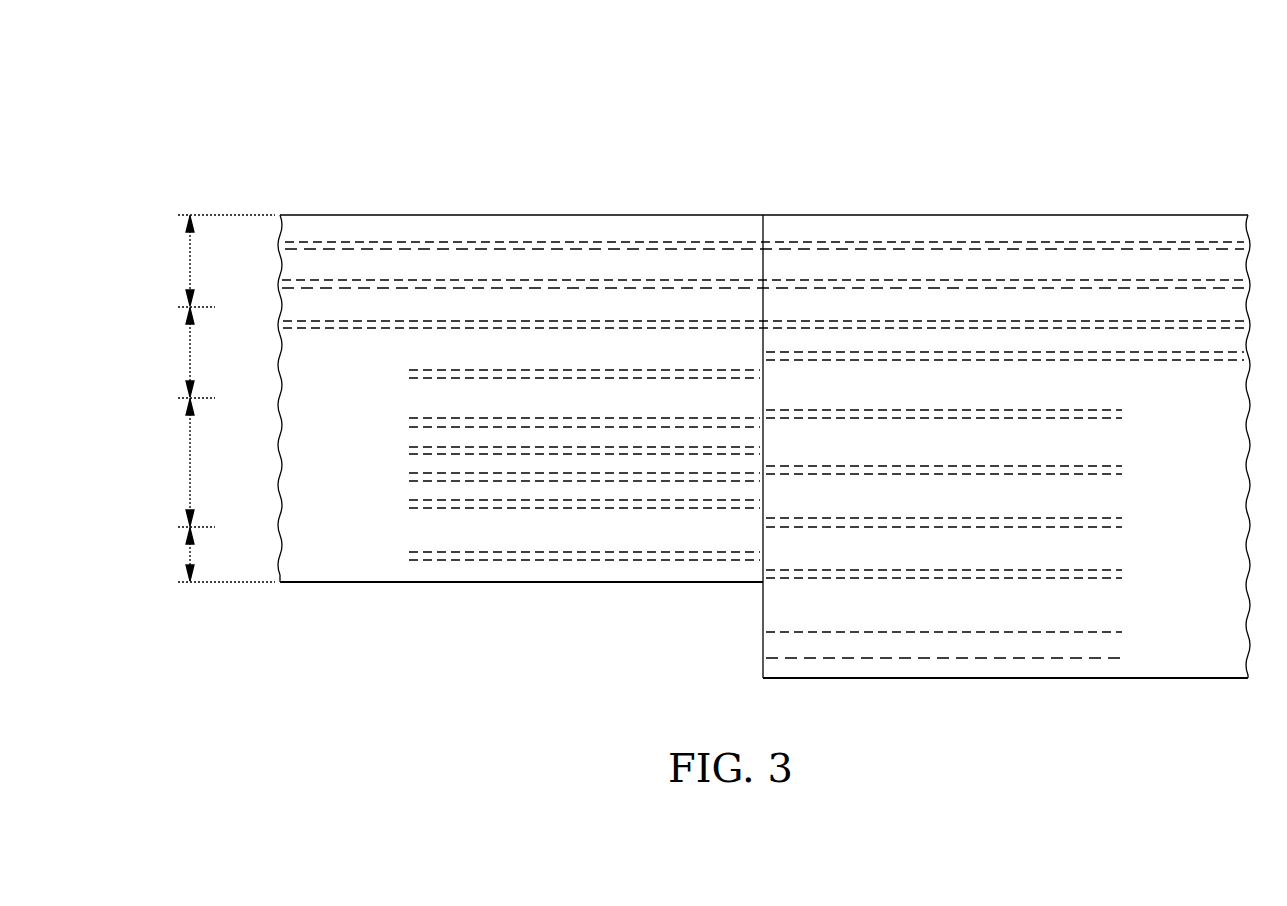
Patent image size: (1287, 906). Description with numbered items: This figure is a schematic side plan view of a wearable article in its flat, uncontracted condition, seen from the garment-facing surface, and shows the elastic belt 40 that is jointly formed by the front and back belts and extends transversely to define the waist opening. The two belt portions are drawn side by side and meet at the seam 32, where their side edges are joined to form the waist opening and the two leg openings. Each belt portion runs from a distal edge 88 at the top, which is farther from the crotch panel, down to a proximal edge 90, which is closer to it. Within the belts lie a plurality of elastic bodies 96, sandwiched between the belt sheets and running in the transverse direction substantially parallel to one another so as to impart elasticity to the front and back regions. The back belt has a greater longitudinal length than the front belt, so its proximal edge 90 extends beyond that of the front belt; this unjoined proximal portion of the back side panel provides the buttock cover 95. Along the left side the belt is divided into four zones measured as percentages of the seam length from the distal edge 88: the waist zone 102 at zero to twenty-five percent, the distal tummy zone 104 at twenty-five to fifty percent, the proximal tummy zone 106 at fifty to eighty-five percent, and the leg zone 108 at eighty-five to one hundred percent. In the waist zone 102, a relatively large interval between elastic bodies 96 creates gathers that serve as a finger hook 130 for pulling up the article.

The elastic belt 40 is at (596, 96).
The distal edge 88 is at (437, 215).
The proximal edge 90 is at (545, 583).
The seam 32 is at (763, 215).
The finger hook 130 is at (543, 252).
The elastic bodies 96 is at (300, 251).
The buttock cover 95 is at (748, 648).
The waist zone 102 is at (190, 263).
The distal tummy zone 104 is at (190, 357).
The proximal tummy zone 106 is at (190, 463).
The leg zone 108 is at (190, 555).